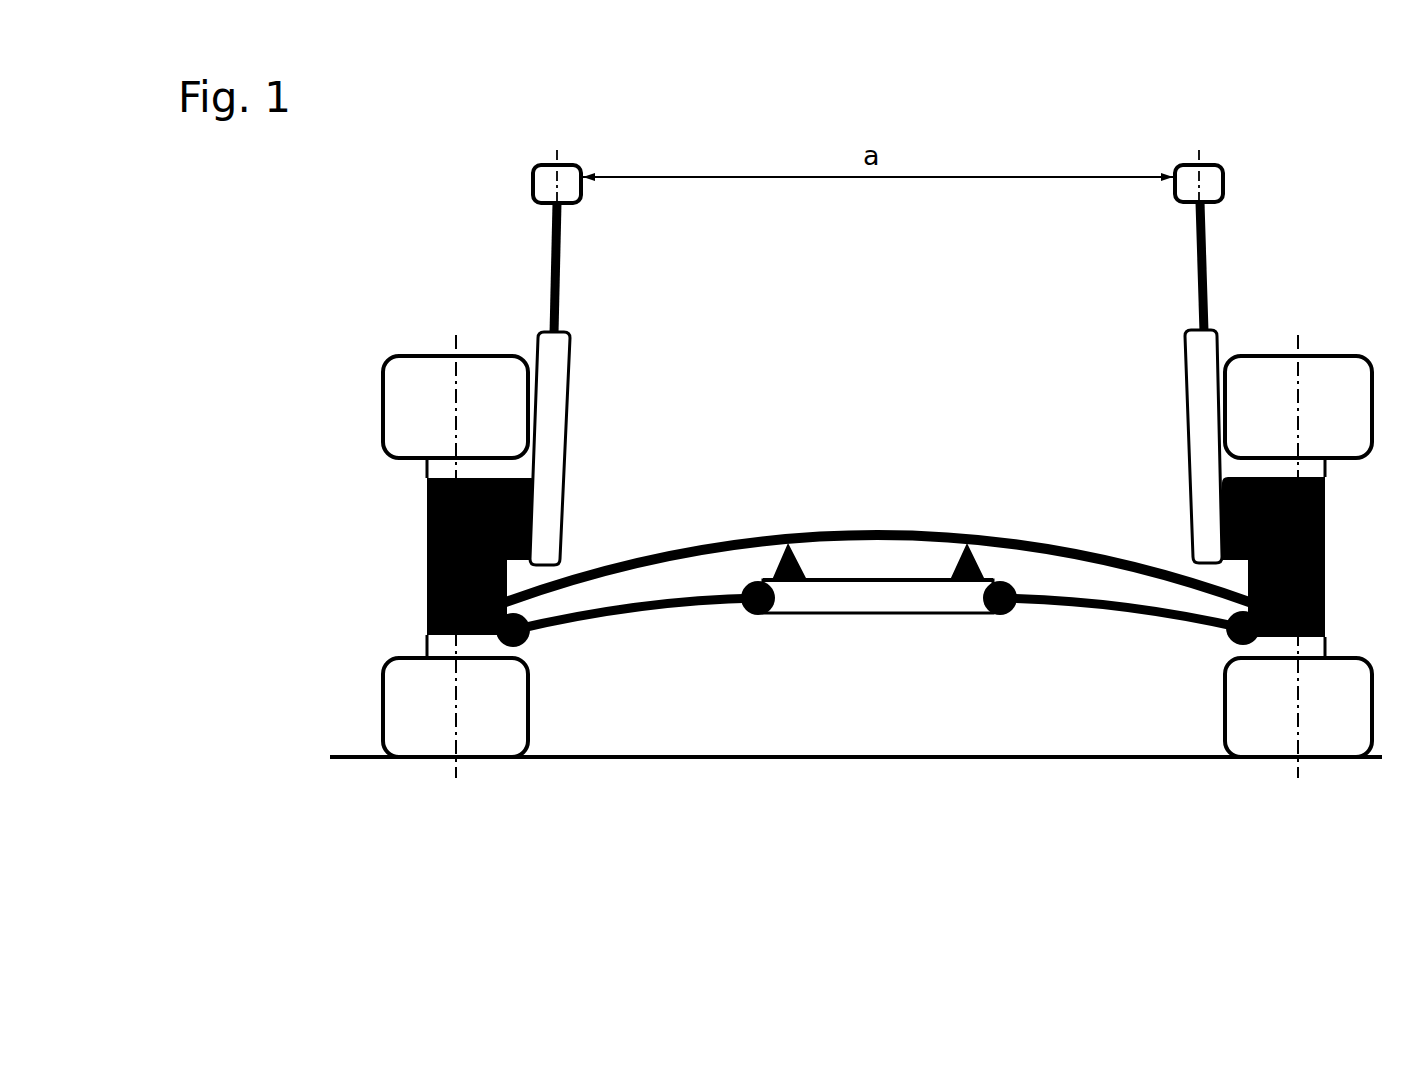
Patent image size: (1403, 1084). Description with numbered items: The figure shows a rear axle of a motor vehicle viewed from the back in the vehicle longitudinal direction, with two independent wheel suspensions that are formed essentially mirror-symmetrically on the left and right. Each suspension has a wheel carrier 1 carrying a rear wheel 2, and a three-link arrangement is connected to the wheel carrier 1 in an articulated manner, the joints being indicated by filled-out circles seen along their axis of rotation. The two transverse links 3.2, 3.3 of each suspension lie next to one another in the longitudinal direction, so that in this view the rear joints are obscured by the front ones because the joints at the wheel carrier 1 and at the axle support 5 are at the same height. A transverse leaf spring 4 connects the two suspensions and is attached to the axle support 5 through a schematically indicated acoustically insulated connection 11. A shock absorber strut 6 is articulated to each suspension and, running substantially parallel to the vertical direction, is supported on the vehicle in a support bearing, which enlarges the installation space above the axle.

The wheel carrier 1 is at (426, 522).
The rear wheel 2 is at (394, 356).
The transverse link 3.2 is at (704, 612).
The transverse link 3.3 is at (1064, 612).
The transverse leaf spring 4 is at (660, 541).
The axle support 5 is at (879, 576).
The shock absorber strut 6 is at (549, 300).
The acoustically insulated connection 11 is at (803, 559).